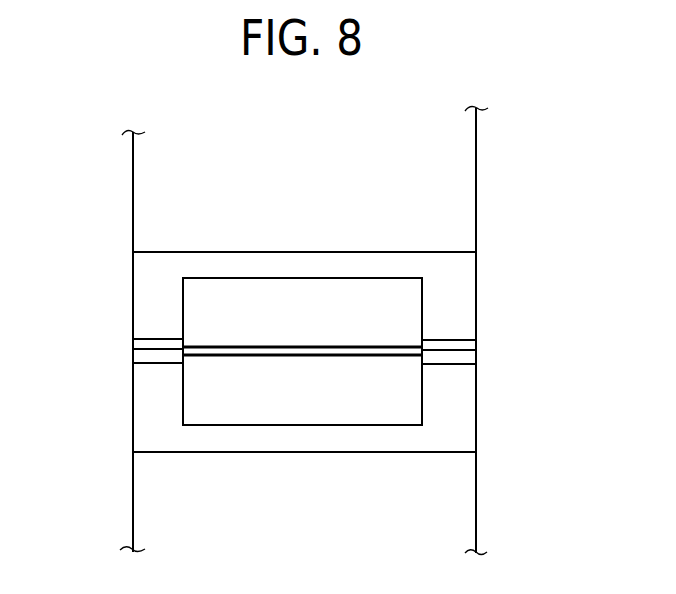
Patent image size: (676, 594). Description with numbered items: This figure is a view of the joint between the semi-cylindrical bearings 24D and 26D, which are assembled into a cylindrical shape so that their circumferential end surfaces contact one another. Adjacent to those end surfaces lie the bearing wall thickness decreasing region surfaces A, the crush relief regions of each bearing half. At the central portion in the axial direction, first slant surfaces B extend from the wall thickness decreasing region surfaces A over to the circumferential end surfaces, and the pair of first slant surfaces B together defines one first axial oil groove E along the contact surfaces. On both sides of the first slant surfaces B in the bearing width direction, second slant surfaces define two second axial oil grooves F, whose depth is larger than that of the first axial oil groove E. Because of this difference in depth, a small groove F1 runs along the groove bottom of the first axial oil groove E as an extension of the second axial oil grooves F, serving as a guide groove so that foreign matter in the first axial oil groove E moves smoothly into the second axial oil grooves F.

The semi-cylindrical bearing 24D is at (462, 150).
The semi-cylindrical bearing 26D is at (137, 532).
The bearing wall thickness decreasing region surface A is at (150, 275).
The first slant surface B is at (272, 290).
The first axial oil groove E is at (374, 275).
The second axial oil groove F is at (158, 366).
The small groove F1 is at (313, 358).